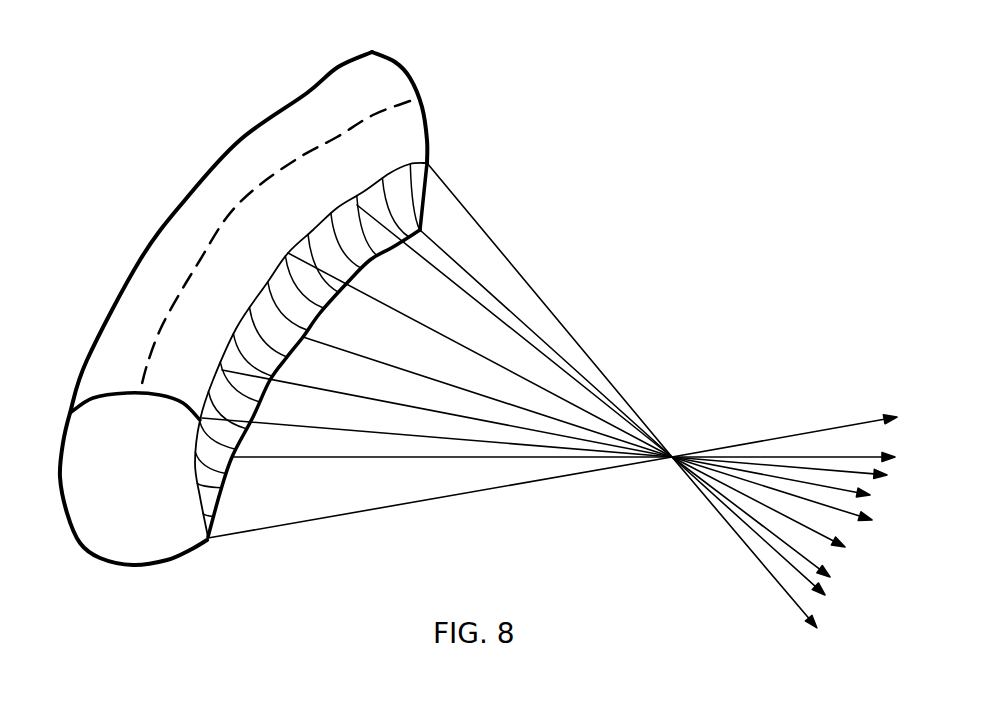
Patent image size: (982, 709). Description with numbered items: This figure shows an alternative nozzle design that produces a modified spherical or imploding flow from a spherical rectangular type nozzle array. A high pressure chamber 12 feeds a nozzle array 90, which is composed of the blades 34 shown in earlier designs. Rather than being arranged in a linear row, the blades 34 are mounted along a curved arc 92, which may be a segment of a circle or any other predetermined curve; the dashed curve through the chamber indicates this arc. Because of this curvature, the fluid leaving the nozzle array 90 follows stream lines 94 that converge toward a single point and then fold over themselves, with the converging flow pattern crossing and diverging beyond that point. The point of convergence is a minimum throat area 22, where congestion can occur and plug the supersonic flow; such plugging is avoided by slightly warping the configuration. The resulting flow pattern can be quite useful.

The high pressure chamber 12 is at (396, 67).
The curved arc 92 is at (410, 101).
The blades 34 is at (428, 162).
The nozzle array 90 is at (398, 205).
The stream lines 94 is at (565, 326).
The minimum throat area 22 is at (676, 449).